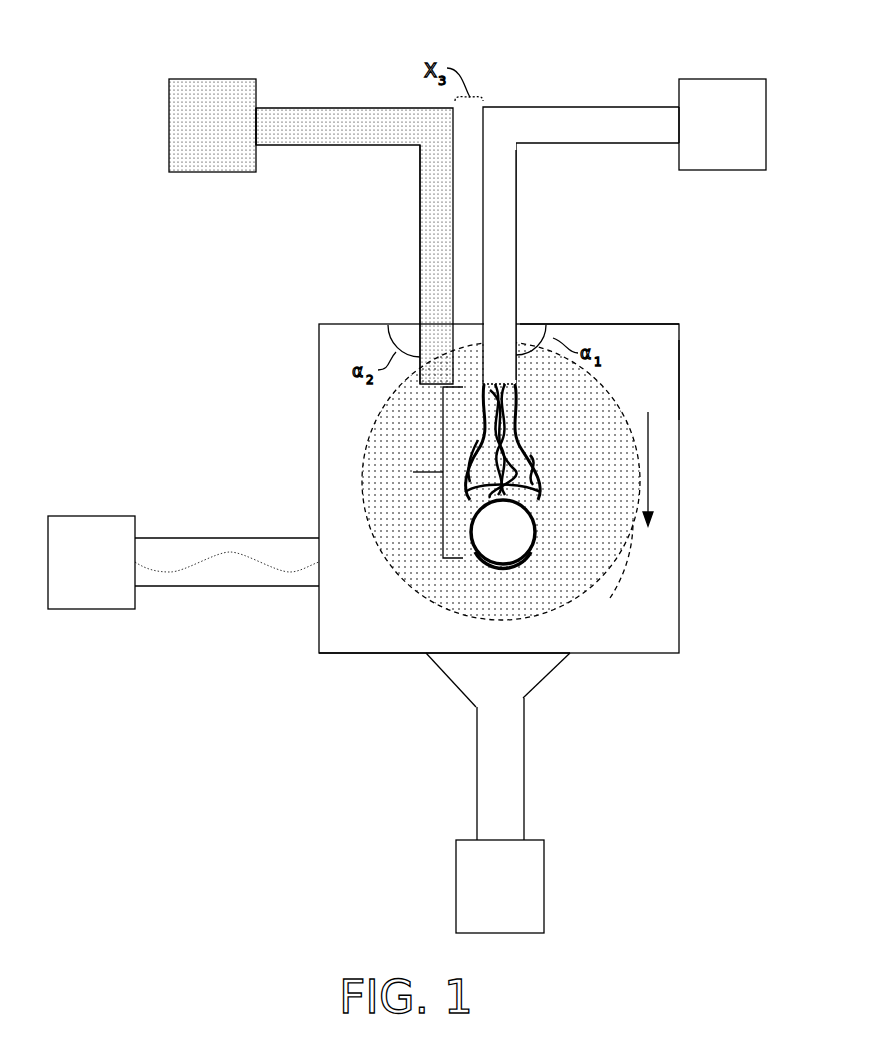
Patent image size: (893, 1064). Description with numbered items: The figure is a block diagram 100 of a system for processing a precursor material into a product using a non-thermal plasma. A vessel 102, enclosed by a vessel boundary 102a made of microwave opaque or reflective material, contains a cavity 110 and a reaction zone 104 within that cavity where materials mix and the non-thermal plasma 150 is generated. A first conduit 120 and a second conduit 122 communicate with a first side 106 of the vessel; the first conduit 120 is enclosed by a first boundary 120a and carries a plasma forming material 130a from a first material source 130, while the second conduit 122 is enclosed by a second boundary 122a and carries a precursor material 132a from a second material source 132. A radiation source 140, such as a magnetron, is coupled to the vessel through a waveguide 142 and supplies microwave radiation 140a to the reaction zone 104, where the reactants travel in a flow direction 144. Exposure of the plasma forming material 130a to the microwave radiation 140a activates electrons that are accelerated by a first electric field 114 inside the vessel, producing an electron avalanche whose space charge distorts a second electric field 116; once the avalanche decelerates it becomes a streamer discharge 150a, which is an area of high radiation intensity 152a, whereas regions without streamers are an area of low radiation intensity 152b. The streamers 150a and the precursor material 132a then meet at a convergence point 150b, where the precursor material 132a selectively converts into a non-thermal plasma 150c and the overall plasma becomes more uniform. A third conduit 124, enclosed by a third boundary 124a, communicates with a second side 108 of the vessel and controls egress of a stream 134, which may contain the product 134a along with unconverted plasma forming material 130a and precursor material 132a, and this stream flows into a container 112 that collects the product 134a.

The block diagram 100 is at (122, 878).
The vessel 102 is at (679, 406).
The vessel boundary 102a is at (679, 379).
The reaction zone 104 is at (625, 542).
The first side 106 is at (625, 325).
The second side 108 is at (383, 655).
The cavity 110 is at (572, 623).
The container 112 is at (544, 885).
The first electric field 114 is at (560, 577).
The second electric field 116 is at (506, 442).
The first conduit 120 is at (516, 303).
The first boundary 120a is at (516, 173).
The second conduit 122 is at (420, 270).
The second boundary 122a is at (421, 176).
The third conduit 124 is at (476, 757).
The third boundary 124a is at (524, 744).
The first material source 130 is at (722, 79).
The plasma forming material 130a is at (722, 160).
The second material source 132 is at (213, 79).
The precursor material 132a is at (217, 158).
The stream 134 is at (490, 823).
The product 134a is at (490, 703).
The radiation source 140 is at (90, 516).
The microwave radiation 140a is at (226, 553).
The waveguide 142 is at (228, 587).
The flow direction 144 is at (648, 460).
The non-thermal plasma 150 is at (413, 472).
The streamer discharge 150a is at (473, 452).
The convergence point 150b is at (537, 527).
The non-thermal plasma 150c is at (535, 543).
The area of high radiation intensity 152a is at (522, 417).
The area of low radiation intensity 152b is at (545, 498).